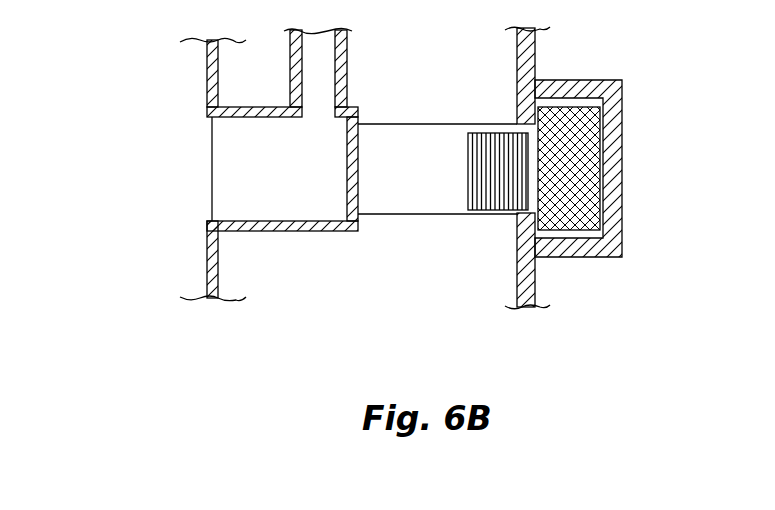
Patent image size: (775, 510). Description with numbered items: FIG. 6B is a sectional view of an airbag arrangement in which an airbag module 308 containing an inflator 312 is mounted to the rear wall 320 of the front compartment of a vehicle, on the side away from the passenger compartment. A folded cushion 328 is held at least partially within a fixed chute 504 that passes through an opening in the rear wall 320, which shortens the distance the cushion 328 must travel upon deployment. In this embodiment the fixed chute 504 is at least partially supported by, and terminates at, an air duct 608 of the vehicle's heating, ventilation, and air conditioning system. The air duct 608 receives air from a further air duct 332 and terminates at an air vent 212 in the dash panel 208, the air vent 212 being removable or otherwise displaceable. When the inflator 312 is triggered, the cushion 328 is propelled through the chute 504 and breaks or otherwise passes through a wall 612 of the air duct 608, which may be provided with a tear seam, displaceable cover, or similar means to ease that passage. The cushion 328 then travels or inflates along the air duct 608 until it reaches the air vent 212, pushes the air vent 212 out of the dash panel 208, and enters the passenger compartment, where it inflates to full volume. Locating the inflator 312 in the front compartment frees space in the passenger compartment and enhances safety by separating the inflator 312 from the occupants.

The dash panel 208 is at (207, 77).
The air vent 212 is at (207, 170).
The air duct 332 is at (349, 79).
The wall 612 is at (360, 168).
The air duct 608 is at (340, 233).
The fixed chute 504 is at (432, 215).
The folded cushion 328 is at (488, 138).
The rear wall 320 is at (535, 64).
The airbag module 308 is at (622, 133).
The inflator 312 is at (585, 190).